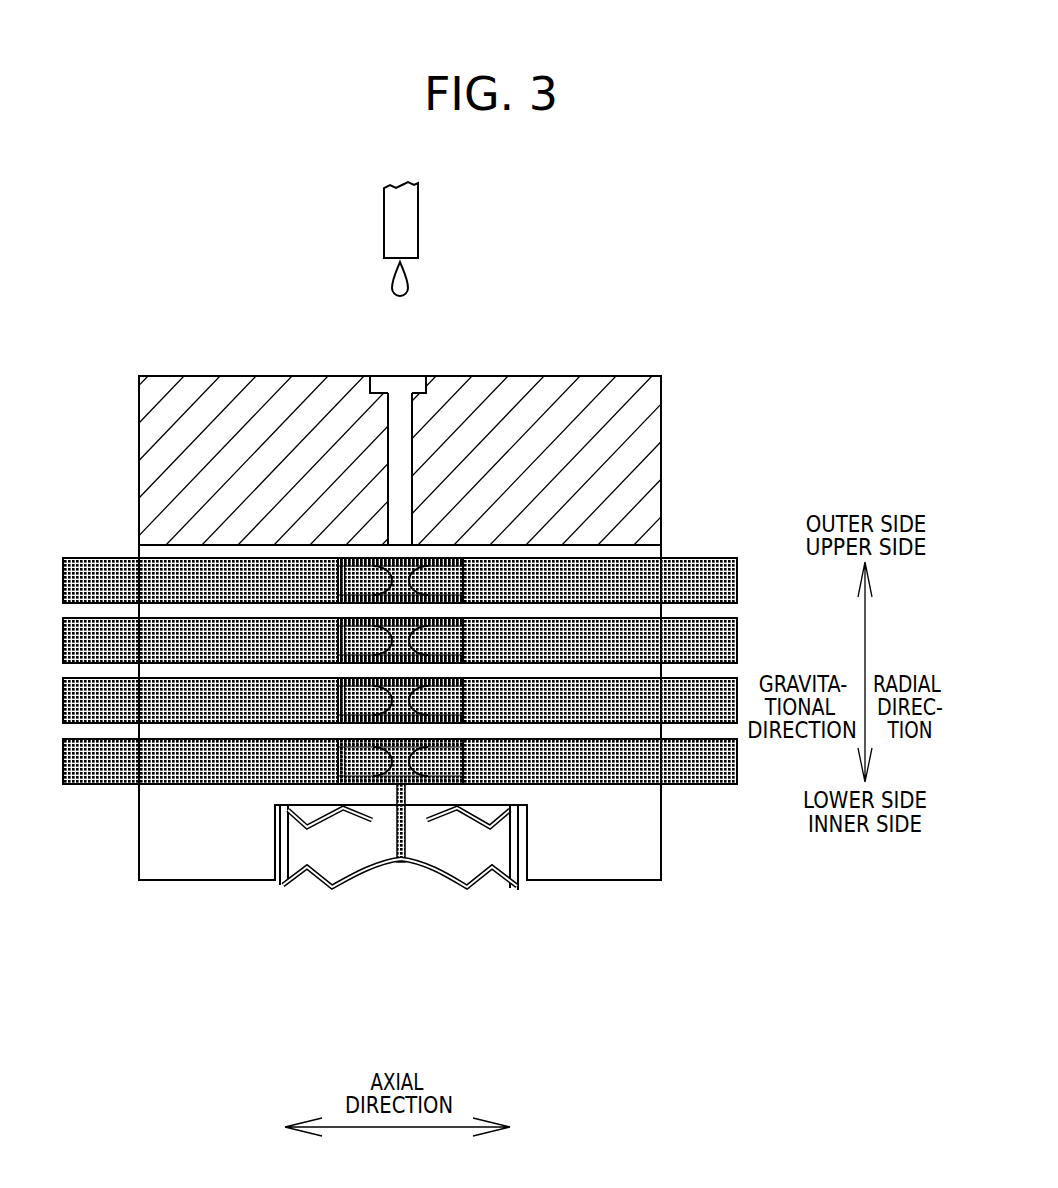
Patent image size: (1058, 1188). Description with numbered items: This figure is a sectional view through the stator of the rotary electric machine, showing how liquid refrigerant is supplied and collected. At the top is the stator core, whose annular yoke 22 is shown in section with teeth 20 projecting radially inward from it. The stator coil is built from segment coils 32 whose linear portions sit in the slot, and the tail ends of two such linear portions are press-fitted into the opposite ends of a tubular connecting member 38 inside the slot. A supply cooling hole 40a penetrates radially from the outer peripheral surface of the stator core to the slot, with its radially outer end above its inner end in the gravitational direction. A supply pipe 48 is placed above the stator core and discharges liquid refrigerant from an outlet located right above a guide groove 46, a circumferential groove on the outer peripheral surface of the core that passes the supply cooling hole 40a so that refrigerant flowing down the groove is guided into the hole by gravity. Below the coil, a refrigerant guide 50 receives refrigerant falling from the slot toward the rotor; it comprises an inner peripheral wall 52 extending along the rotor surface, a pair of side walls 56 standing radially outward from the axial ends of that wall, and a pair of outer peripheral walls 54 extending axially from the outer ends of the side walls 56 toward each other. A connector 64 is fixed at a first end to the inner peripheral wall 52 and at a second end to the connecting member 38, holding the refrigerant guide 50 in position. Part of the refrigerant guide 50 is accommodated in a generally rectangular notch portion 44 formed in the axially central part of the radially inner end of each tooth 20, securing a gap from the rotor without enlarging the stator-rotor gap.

The teeth 20 is at (139, 821).
The yoke 22 is at (139, 417).
The segment coil 32 is at (72, 585).
The connecting member 38 is at (446, 560).
The supply cooling hole 40a is at (393, 433).
The notch portion 44 is at (285, 884).
The guide groove 46 is at (424, 377).
The supply pipe 48 is at (417, 222).
The refrigerant guide 50 is at (374, 894).
The inner peripheral wall 52 is at (432, 878).
The outer peripheral wall 54 is at (476, 825).
The side wall 56 is at (512, 853).
The connector 64 is at (380, 869).